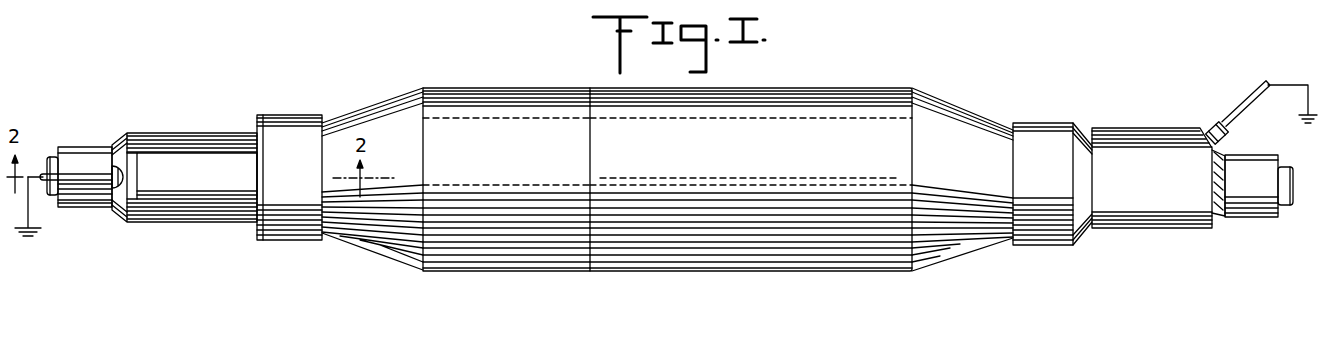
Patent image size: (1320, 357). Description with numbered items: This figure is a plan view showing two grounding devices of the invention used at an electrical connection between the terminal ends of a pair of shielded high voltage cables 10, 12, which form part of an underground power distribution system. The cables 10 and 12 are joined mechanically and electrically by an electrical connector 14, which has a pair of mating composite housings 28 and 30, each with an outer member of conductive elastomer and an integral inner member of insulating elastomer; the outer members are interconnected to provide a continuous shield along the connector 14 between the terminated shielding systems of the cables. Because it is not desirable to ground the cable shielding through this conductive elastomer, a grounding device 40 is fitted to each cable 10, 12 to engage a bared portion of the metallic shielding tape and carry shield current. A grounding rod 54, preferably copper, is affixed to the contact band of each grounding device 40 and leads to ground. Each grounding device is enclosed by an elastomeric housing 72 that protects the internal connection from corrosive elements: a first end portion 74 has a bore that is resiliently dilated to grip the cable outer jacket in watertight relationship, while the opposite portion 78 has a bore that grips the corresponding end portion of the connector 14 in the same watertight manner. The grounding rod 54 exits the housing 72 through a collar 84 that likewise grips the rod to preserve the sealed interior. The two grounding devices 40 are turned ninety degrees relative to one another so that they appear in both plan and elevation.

The high voltage shielded electrical cable 10 is at (52, 150).
The high voltage shielded electrical cable 12 is at (1289, 217).
The electrical connector 14 is at (667, 178).
The composite housing 28 is at (500, 241).
The composite housing 30 is at (695, 241).
The grounding device 40 is at (187, 129).
The grounding rod 54 is at (80, 181).
The housing 72 is at (192, 208).
The first end portion 74 is at (82, 155).
The portion 78 is at (288, 208).
The collar 84 is at (123, 168).